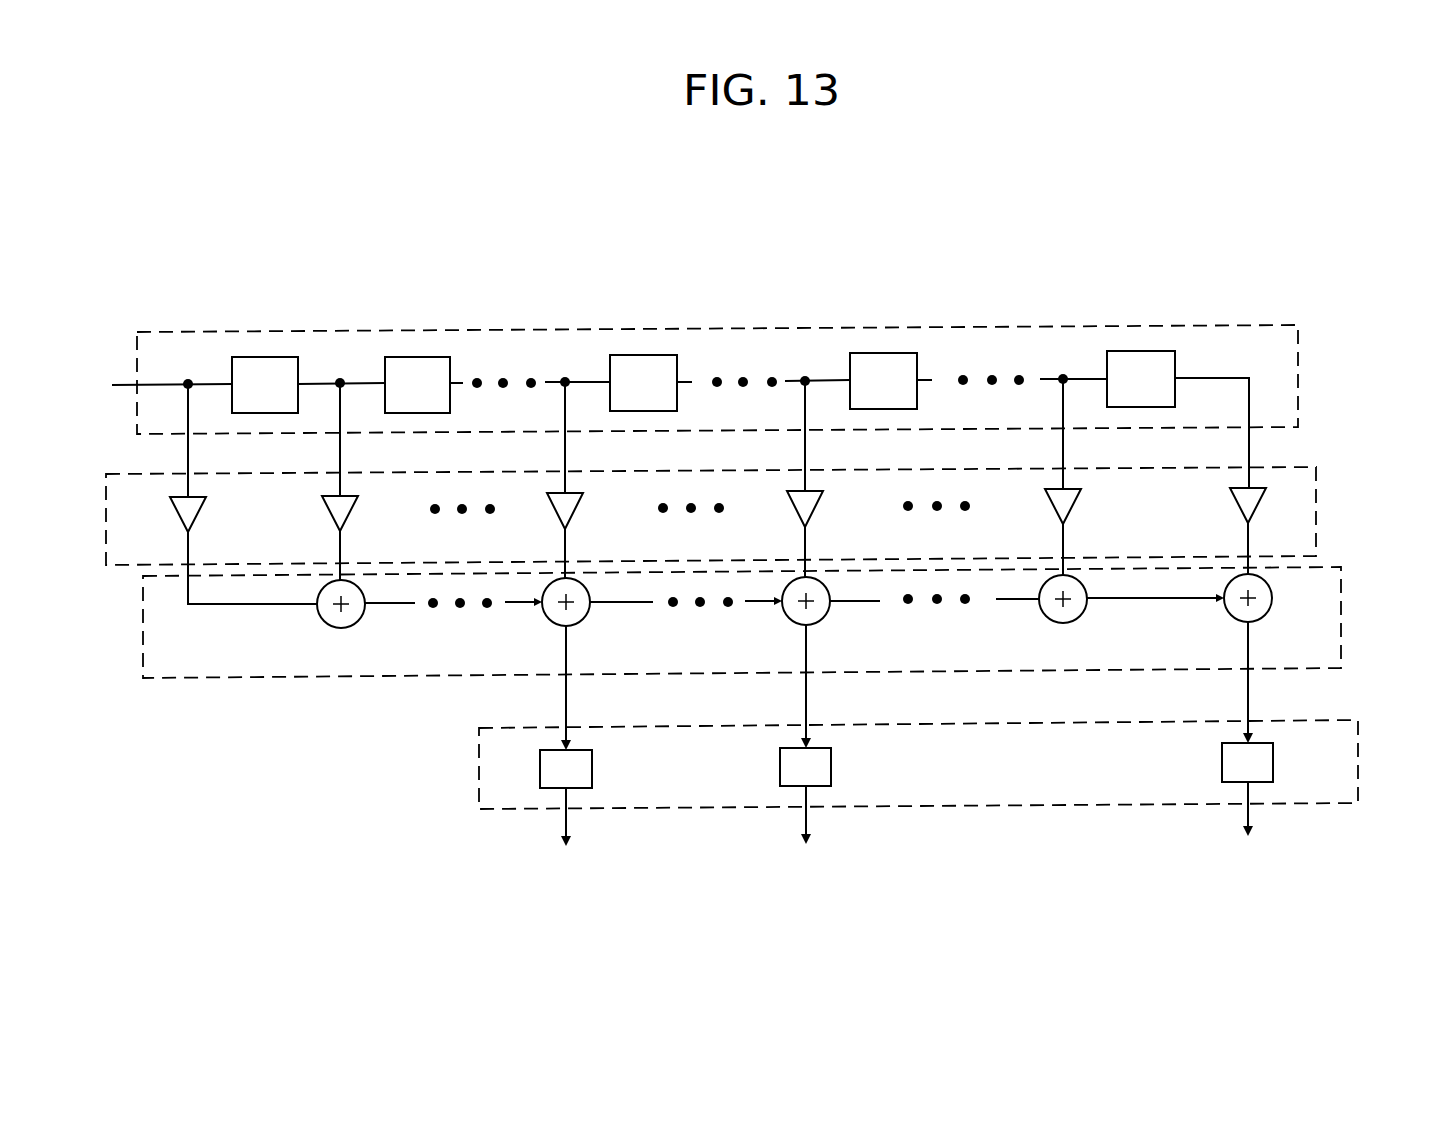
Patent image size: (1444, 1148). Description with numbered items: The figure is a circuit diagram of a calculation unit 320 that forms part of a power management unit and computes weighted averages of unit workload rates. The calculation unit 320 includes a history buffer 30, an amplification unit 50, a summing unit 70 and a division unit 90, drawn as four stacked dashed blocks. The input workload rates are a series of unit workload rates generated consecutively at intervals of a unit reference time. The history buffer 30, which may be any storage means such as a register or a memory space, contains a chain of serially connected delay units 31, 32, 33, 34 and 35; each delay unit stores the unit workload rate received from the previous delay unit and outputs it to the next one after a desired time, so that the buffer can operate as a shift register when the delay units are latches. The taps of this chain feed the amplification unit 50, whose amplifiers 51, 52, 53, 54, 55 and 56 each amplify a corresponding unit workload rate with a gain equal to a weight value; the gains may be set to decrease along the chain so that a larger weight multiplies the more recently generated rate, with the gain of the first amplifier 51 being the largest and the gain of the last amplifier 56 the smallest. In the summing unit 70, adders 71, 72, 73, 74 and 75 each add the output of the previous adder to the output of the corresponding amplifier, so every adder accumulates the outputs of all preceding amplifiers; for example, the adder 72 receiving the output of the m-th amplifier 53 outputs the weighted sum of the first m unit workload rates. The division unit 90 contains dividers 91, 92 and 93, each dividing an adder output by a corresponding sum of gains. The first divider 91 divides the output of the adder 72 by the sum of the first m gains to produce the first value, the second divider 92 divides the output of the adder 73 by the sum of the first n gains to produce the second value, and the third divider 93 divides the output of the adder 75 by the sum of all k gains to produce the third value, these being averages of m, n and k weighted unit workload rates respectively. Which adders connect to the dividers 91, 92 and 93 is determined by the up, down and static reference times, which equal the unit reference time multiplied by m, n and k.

The calculation unit 320 is at (759, 223).
The history buffer 30 is at (1298, 375).
The delay unit 31 is at (263, 357).
The delay unit 32 is at (416, 357).
The delay unit 33 is at (641, 355).
The delay unit 34 is at (883, 353).
The delay unit 35 is at (1141, 351).
The amplification unit 50 is at (1316, 510).
The first amplifier 51 is at (177, 518).
The amplifier 52 is at (329, 517).
The m-th amplifier 53 is at (554, 515).
The amplifier 54 is at (794, 515).
The amplifier 55 is at (1047, 514).
The last amplifier 56 is at (1232, 514).
The summing unit 70 is at (1341, 617).
The adder 71 is at (358, 621).
The adder 72 is at (583, 619).
The adder 73 is at (823, 618).
The adder 74 is at (1080, 616).
The adder 75 is at (1268, 610).
The division unit 90 is at (1358, 762).
The first divider 91 is at (592, 768).
The second divider 92 is at (831, 766).
The third divider 93 is at (1273, 761).